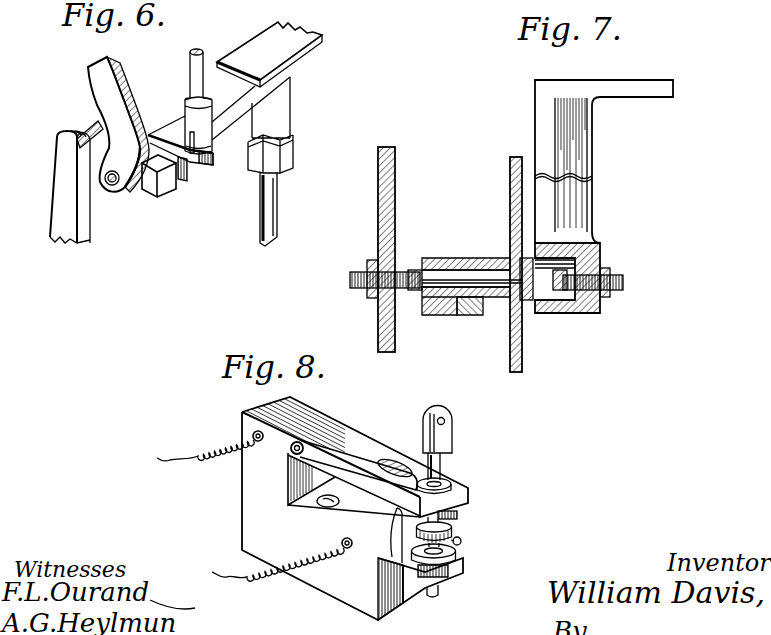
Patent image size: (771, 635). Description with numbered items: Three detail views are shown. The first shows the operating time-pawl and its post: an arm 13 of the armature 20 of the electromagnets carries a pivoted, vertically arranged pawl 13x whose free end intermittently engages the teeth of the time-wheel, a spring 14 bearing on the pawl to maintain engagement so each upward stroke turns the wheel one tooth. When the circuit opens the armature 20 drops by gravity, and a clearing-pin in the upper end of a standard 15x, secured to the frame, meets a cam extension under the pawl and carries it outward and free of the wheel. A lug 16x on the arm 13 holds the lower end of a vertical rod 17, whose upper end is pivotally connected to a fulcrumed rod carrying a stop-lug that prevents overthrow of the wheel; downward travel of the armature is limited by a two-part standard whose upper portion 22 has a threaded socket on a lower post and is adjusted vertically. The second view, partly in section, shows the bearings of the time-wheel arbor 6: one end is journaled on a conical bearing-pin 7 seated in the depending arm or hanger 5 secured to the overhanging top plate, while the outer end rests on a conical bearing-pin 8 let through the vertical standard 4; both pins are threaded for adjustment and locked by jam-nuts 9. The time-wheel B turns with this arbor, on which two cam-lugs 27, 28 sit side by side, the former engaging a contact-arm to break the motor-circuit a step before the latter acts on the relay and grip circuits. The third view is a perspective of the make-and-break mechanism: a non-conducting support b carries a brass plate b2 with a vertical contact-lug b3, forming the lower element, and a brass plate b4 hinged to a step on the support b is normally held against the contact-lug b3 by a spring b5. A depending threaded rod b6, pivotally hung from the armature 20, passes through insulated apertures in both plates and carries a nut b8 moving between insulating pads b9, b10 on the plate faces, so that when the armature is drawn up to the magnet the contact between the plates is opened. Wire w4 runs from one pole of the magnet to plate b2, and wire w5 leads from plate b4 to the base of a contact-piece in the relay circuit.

In FIG. 6, the arm 13 is at (171, 186).
In FIG. 6, the pawl 13x is at (103, 98).
In FIG. 6, the spring 14 is at (128, 97).
In FIG. 6, the standard 15x is at (58, 208).
In FIG. 6, the lug 16x is at (212, 155).
In FIG. 6, the rod 17 is at (202, 60).
In FIG. 6, the armature 20 is at (269, 54).
In FIG. 6, the upper portion of two-part standard 22 is at (276, 108).
In FIG. 7, the standard or bar 4 is at (378, 205).
In FIG. 7, the time-wheel B is at (502, 264).
In FIG. 7, the arm or hanger 5 is at (583, 160).
In FIG. 7, the time-wheel shaft or arbor 6 is at (443, 277).
In FIG. 7, the conical bearing-pin 7 is at (623, 277).
In FIG. 7, the conical bearing-pin 8 is at (350, 279).
In FIG. 7, the jam-nuts 9 is at (378, 260).
In FIG. 7, the cam-lug 27 is at (452, 316).
In FIG. 7, the cam-lug 28 is at (468, 318).
In FIG. 8, the non-conducting support b is at (355, 508).
In FIG. 8, the brass plate b2 is at (328, 532).
In FIG. 8, the contact-lug b3 is at (393, 523).
In FIG. 8, the brass plate b4 is at (368, 481).
In FIG. 8, the spring b5 is at (353, 445).
In FIG. 8, the rod b6 is at (448, 466).
In FIG. 8, the nut b8 is at (462, 538).
In FIG. 8, the insulating pad or block b9 is at (460, 513).
In FIG. 8, the insulating pad or block b10 is at (458, 561).
In FIG. 8, the wire w4 is at (210, 445).
In FIG. 8, the wire w5 is at (277, 564).